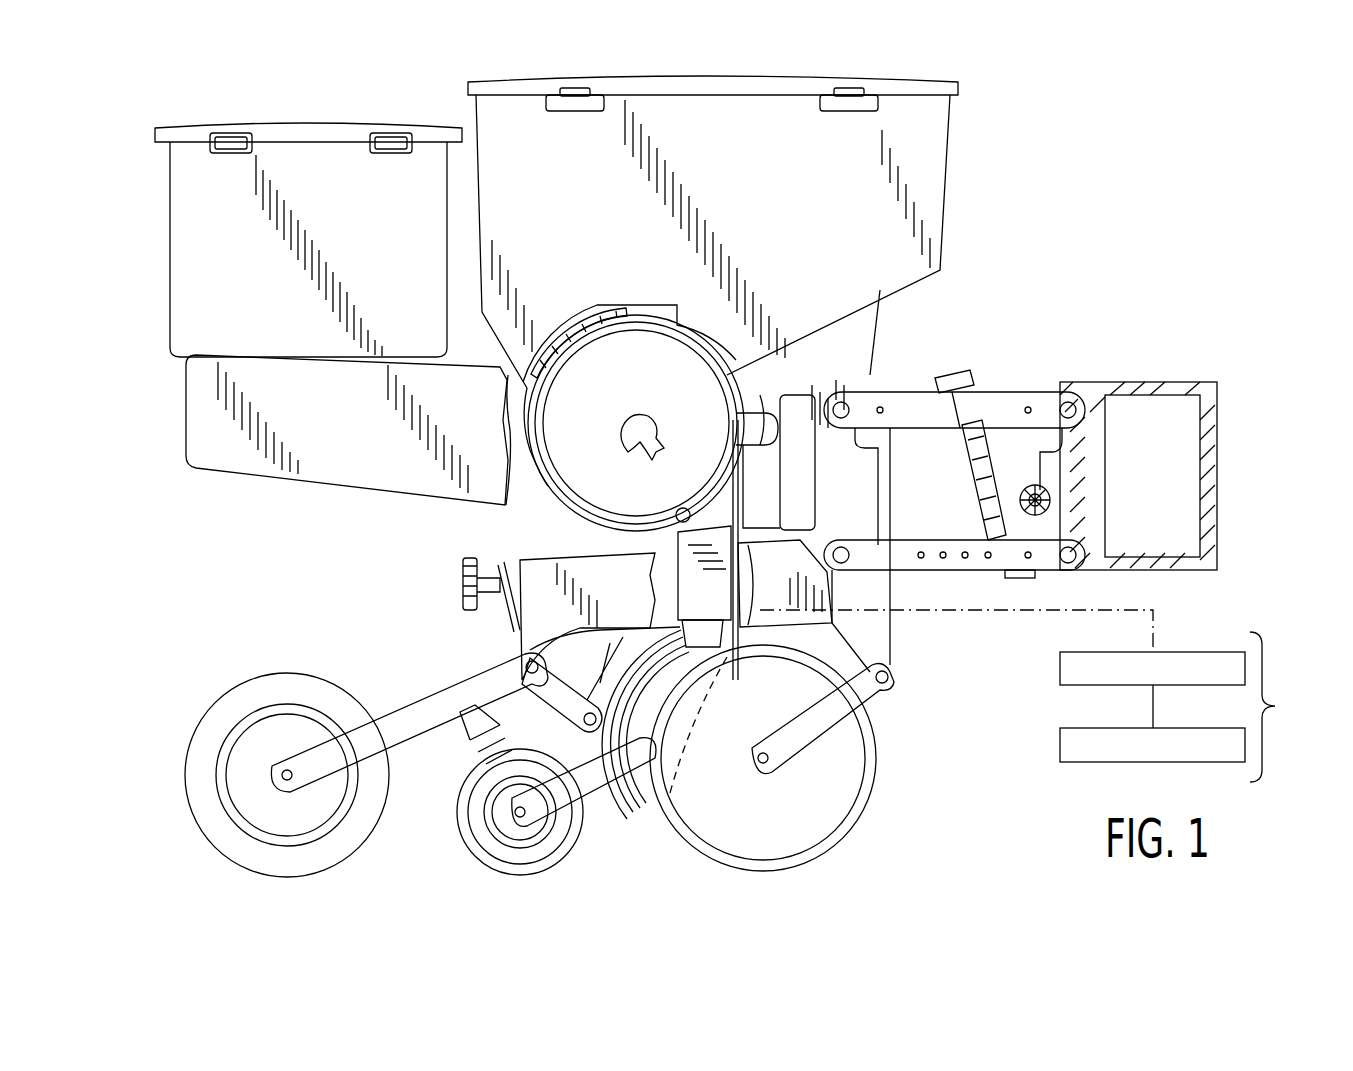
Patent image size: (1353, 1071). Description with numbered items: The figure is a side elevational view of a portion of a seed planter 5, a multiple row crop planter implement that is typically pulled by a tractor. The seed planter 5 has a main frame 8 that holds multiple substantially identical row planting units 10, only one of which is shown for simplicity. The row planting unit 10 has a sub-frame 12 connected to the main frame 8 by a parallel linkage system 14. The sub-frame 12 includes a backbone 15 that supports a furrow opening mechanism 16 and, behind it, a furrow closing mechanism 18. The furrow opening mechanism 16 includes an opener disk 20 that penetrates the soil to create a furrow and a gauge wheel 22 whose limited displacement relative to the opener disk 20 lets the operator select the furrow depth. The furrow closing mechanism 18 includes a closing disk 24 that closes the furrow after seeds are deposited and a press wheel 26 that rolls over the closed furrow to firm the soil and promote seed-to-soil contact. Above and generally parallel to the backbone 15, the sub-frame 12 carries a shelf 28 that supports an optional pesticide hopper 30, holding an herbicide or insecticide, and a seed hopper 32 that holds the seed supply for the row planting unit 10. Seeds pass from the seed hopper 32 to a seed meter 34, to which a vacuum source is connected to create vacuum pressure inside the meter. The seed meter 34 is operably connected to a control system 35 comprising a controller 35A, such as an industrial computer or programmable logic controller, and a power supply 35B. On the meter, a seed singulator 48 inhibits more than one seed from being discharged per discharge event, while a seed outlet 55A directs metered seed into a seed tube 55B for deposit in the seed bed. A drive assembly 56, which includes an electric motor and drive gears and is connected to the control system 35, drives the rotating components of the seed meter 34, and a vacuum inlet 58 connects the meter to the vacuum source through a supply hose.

The seed planter 5 is at (1052, 177).
The main frame 8 is at (1170, 384).
The row planting unit 10 is at (948, 250).
The sub-frame 12 is at (892, 491).
The parallel linkage system 14 is at (1000, 394).
The backbone 15 is at (540, 560).
The furrow opening mechanism 16 is at (900, 770).
The furrow closing mechanism 18 is at (430, 812).
The opener disk 20 is at (818, 850).
The gauge wheel 22 is at (836, 808).
The closing disk 24 is at (560, 848).
The press wheel 26 is at (226, 706).
The shelf 28 is at (218, 462).
The pesticide hopper 30 is at (399, 240).
The seed hopper 32 is at (815, 172).
The seed meter 34 is at (676, 372).
The control system 35 is at (1038, 696).
The controller 35A is at (1060, 668).
The power supply 35B is at (1060, 744).
The seed singulator 48 is at (606, 322).
The seed outlet 55A is at (675, 520).
The seed tube 55B is at (698, 735).
The drive assembly 56 is at (756, 432).
The vacuum inlet 58 is at (618, 450).